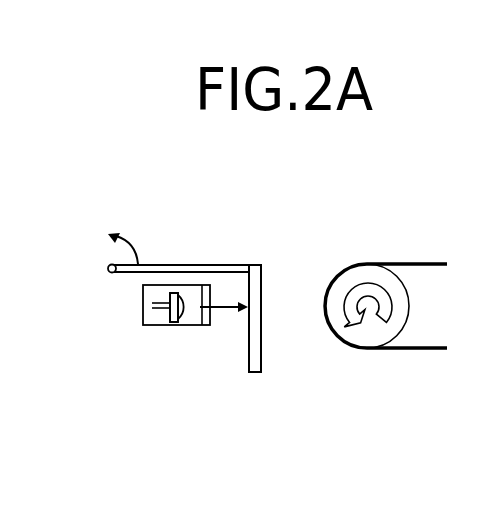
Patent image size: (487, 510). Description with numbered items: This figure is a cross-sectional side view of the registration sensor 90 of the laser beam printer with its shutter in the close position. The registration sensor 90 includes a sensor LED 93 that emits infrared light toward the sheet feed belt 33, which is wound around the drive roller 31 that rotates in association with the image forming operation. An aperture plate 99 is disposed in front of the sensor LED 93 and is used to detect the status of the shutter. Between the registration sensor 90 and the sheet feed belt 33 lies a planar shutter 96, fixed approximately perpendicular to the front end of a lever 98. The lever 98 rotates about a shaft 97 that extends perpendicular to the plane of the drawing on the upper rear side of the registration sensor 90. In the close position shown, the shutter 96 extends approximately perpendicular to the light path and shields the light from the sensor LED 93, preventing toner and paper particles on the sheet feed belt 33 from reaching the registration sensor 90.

The drive roller 31 is at (372, 335).
The sheet feed belt 33 is at (405, 265).
The registration sensor 90 is at (148, 327).
The sensor LED 93 is at (174, 307).
The shutter 96 is at (264, 290).
The shaft 97 is at (108, 266).
The lever 98 is at (186, 265).
The aperture plate 99 is at (203, 318).